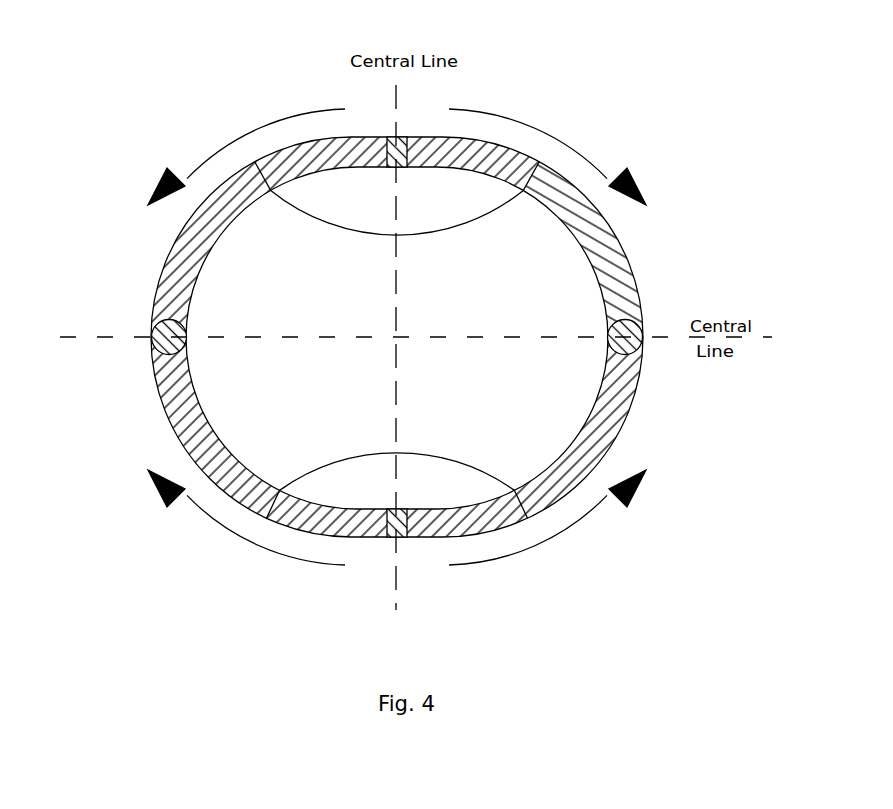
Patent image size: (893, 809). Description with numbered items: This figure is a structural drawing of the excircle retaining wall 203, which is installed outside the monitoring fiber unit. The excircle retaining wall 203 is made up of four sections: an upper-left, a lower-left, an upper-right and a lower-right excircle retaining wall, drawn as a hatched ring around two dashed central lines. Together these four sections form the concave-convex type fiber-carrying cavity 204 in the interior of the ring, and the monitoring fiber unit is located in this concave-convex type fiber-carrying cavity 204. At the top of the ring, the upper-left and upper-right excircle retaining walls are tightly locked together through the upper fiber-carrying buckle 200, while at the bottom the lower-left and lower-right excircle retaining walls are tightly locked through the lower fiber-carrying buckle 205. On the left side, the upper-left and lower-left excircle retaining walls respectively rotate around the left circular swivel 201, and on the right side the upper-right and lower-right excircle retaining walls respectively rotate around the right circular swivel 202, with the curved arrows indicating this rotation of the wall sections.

The upper fiber-carrying buckle 200 is at (406, 140).
The left circular swivel 201 is at (151, 318).
The right circular swivel 202 is at (636, 322).
The excircle retaining wall 203 is at (187, 452).
The concave-convex type fiber-carrying cavity 204 is at (563, 383).
The lower fiber-carrying buckle 205 is at (400, 523).